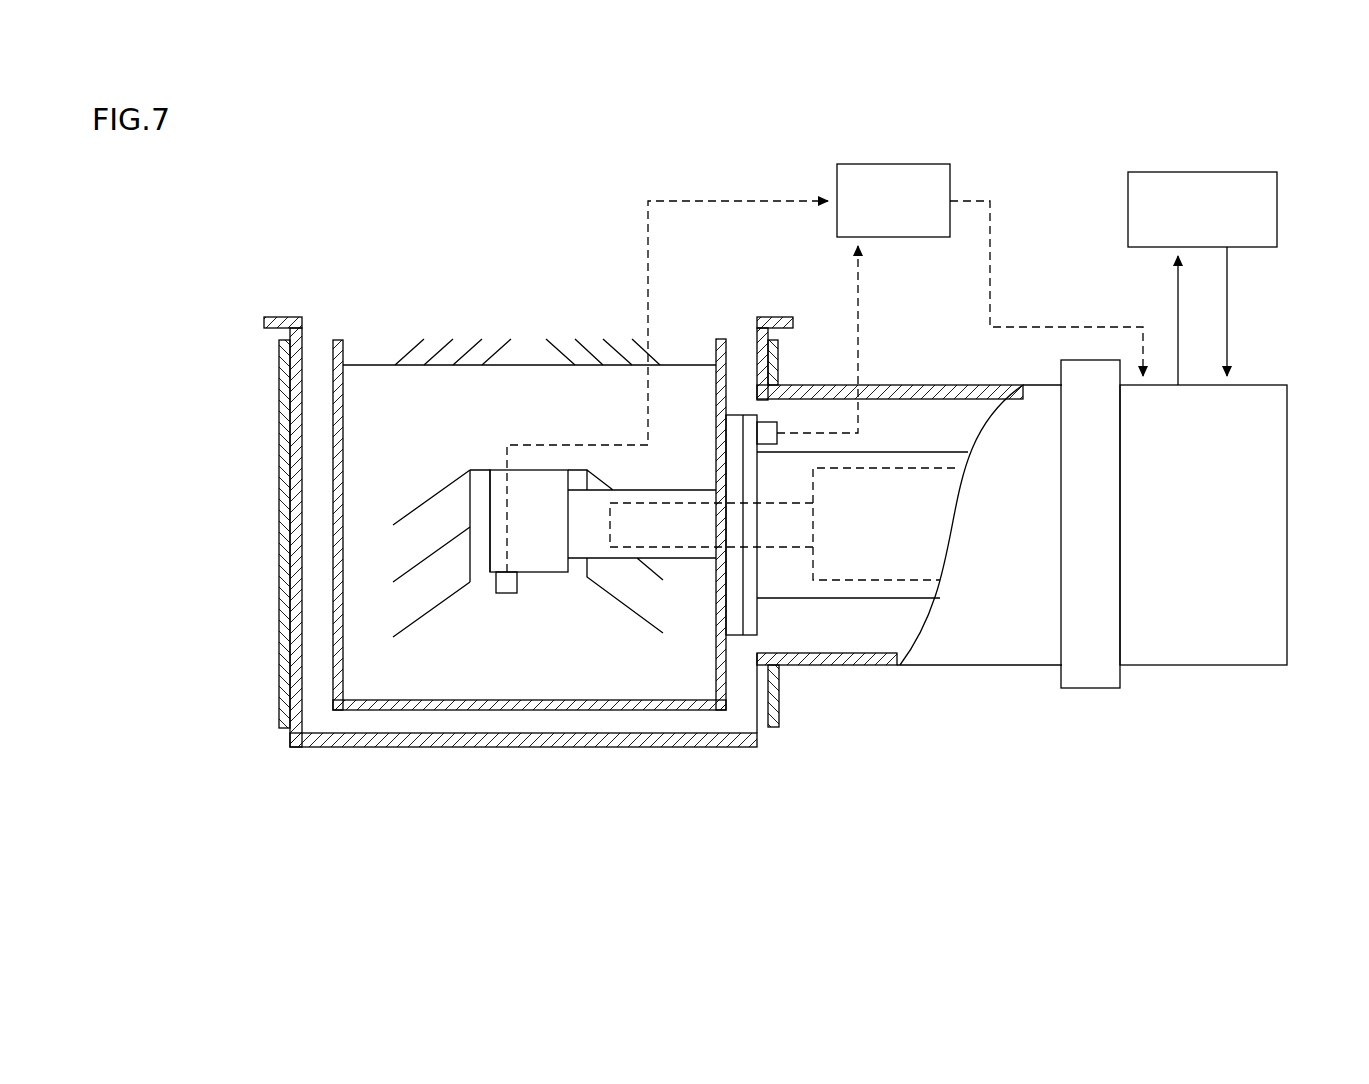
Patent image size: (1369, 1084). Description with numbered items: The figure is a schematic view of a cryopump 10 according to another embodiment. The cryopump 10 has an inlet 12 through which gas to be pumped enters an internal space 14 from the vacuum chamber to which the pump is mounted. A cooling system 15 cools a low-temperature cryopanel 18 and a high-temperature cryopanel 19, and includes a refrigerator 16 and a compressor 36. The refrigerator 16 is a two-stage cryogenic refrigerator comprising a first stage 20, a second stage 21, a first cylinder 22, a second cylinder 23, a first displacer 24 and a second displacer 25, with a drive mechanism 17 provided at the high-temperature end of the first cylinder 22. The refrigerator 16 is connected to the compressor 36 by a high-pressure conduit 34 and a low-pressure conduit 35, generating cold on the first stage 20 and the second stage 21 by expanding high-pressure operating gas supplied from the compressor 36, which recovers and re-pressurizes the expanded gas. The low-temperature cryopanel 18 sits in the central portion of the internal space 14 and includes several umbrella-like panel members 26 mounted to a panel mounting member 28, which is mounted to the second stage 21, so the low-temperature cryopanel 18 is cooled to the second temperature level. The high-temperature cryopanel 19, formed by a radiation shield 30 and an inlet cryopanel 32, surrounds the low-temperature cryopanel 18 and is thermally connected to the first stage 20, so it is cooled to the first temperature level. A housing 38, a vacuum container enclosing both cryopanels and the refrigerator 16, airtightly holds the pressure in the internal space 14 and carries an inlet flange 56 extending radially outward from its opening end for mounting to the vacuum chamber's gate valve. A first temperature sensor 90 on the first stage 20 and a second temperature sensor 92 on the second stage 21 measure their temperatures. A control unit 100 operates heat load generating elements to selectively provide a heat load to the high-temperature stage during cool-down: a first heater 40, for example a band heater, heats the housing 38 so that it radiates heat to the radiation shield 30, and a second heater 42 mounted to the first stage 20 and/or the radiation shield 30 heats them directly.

The cryopump 10 is at (262, 840).
The inlet 12 is at (558, 332).
The internal space 14 is at (367, 673).
The cooling system 15 is at (1272, 290).
The refrigerator 16 is at (898, 440).
The drive mechanism 17 is at (1287, 410).
The low-temperature cryopanel 18 is at (428, 476).
The high-temperature cryopanel 19 is at (300, 262).
The first stage 20 is at (742, 380).
The second stage 21 is at (540, 573).
The first cylinder 22 is at (845, 600).
The second cylinder 23 is at (676, 562).
The first displacer 24 is at (930, 468).
The second displacer 25 is at (673, 503).
The panel members 26 is at (432, 610).
The panel mounting member 28 is at (478, 470).
The radiation shield 30 is at (332, 372).
The inlet cryopanel 32 is at (408, 352).
The high-pressure conduit 34 is at (1227, 290).
The low-pressure conduit 35 is at (1178, 315).
The compressor 36 is at (1128, 210).
The housing 38 is at (290, 523).
The first heater 40 is at (285, 700).
The second heater 42 is at (760, 617).
The inlet flange 56 is at (776, 317).
The first temperature sensor 90 is at (770, 421).
The second temperature sensor 92 is at (506, 594).
The control unit 100 is at (905, 164).